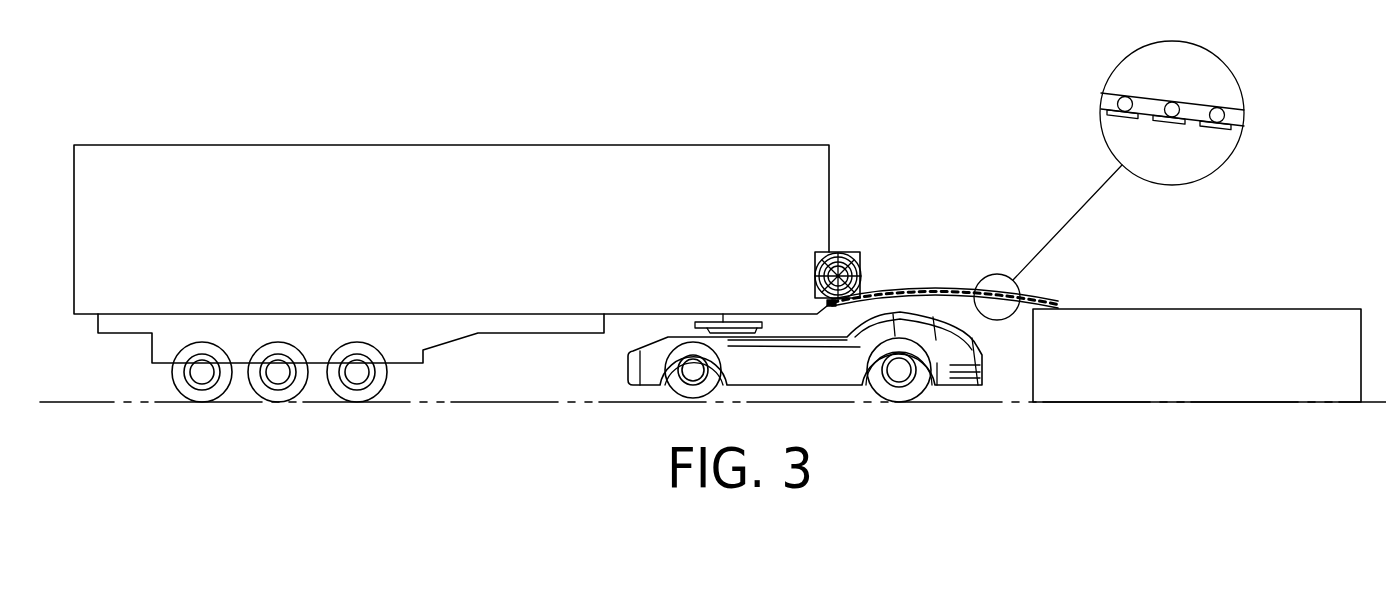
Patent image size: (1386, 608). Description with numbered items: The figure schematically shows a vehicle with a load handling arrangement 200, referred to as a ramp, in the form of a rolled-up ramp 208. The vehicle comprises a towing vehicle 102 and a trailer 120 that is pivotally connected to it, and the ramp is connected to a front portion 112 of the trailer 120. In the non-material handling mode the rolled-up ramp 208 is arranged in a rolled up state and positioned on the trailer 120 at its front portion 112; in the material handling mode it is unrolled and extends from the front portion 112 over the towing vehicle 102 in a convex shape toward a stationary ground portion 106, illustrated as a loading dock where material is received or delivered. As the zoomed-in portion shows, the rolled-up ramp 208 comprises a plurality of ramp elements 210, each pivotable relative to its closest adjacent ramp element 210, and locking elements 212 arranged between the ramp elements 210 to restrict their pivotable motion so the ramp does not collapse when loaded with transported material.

The trailer 120 is at (710, 192).
The front portion 112 is at (832, 312).
The rolled-up ramp 208 is at (880, 257).
The load handling arrangement 200 is at (950, 278).
The ramp element 210 is at (1147, 100).
The locking element 212 is at (1122, 120).
The stationary ground portion 106 is at (1147, 360).
The towing vehicle 102 is at (952, 353).